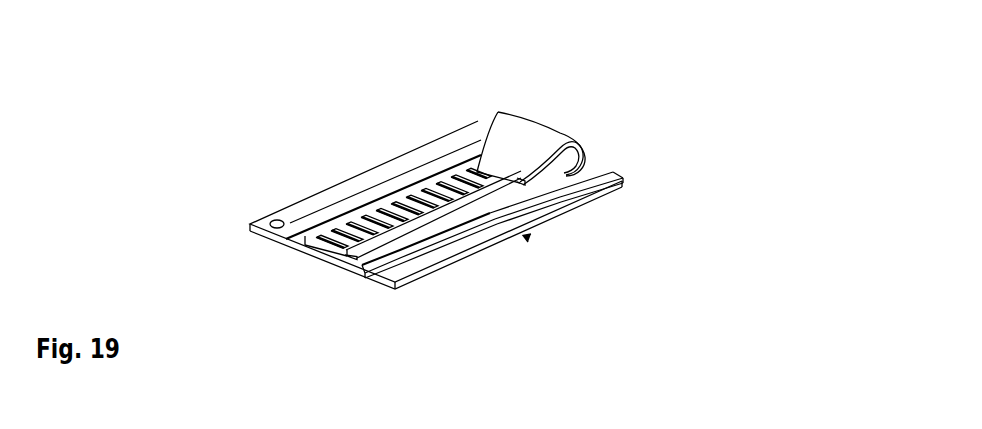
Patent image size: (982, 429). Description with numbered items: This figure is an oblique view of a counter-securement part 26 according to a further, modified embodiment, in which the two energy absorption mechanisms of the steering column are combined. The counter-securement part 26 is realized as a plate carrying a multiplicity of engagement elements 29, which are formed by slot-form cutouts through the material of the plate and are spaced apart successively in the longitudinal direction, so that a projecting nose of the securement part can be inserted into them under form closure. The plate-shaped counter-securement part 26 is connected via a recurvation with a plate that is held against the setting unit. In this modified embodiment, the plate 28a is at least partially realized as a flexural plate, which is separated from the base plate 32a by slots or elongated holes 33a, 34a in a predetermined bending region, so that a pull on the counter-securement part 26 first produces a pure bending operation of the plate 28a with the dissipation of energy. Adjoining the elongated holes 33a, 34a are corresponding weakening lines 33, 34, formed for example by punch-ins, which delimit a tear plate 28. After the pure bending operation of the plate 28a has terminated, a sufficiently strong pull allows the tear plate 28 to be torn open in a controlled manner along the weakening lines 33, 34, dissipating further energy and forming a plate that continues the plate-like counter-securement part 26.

The counter-securement part 26 is at (382, 200).
The tear plate 28 is at (366, 259).
The flexural plate 28a is at (541, 200).
The engagement elements 29 is at (465, 180).
The base plate 32a is at (524, 236).
The weakening line 33 is at (413, 247).
The elongated hole 33a is at (568, 172).
The weakening line 34 is at (343, 203).
The elongated hole 34a is at (478, 138).